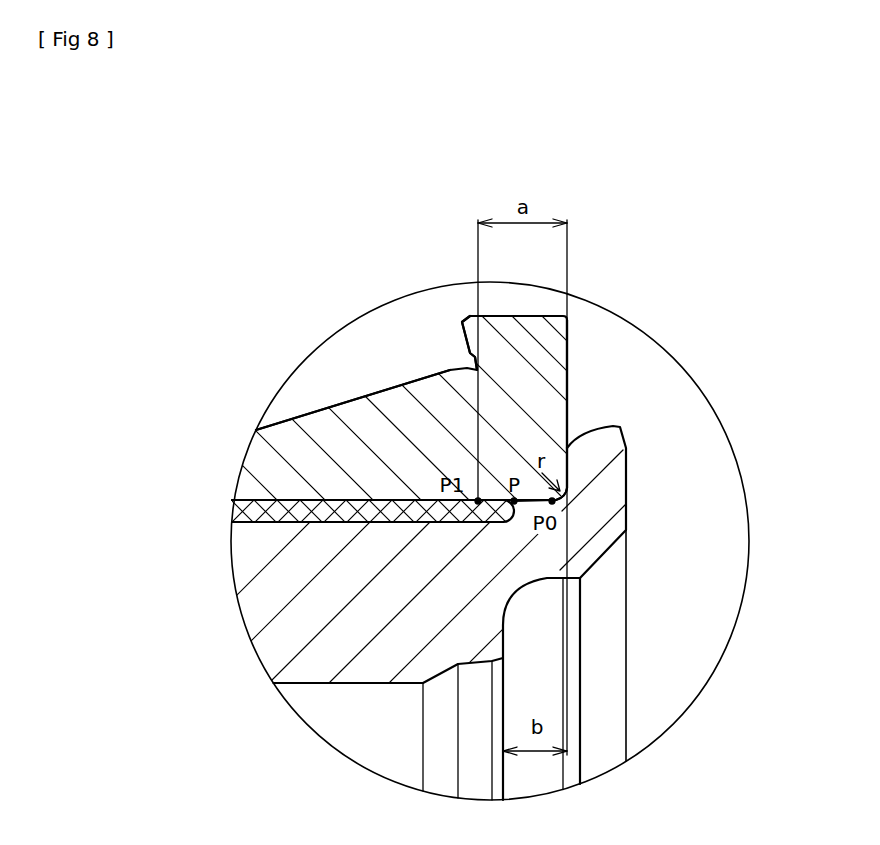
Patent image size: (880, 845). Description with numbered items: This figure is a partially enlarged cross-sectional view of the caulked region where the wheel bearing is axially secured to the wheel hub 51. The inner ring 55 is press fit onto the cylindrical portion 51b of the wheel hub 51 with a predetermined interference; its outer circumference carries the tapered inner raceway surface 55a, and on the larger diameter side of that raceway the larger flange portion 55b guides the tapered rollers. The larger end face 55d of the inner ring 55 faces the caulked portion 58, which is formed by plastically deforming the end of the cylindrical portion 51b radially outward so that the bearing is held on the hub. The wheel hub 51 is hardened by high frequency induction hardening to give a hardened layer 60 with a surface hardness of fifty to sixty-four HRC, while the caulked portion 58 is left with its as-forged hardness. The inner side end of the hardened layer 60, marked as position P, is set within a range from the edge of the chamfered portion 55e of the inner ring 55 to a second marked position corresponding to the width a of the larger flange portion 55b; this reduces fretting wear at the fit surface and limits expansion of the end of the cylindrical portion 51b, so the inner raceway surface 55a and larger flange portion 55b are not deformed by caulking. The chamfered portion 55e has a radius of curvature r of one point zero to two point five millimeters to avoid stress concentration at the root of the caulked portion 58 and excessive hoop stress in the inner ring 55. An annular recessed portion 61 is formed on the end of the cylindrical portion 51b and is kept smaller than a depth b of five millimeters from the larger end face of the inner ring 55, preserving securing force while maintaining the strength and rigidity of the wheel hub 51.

The inner ring 55 is at (447, 425).
The inner raceway surface 55a is at (353, 400).
The larger flange portion 55b is at (460, 338).
The larger end face 55d is at (567, 367).
The chamfered portion 55e is at (603, 536).
The wheel hub 51 is at (247, 572).
The cylindrical portion 51b is at (387, 500).
The hardened layer 60 is at (300, 512).
The caulked portion 58 is at (597, 483).
The annular recessed portion 61 is at (530, 597).